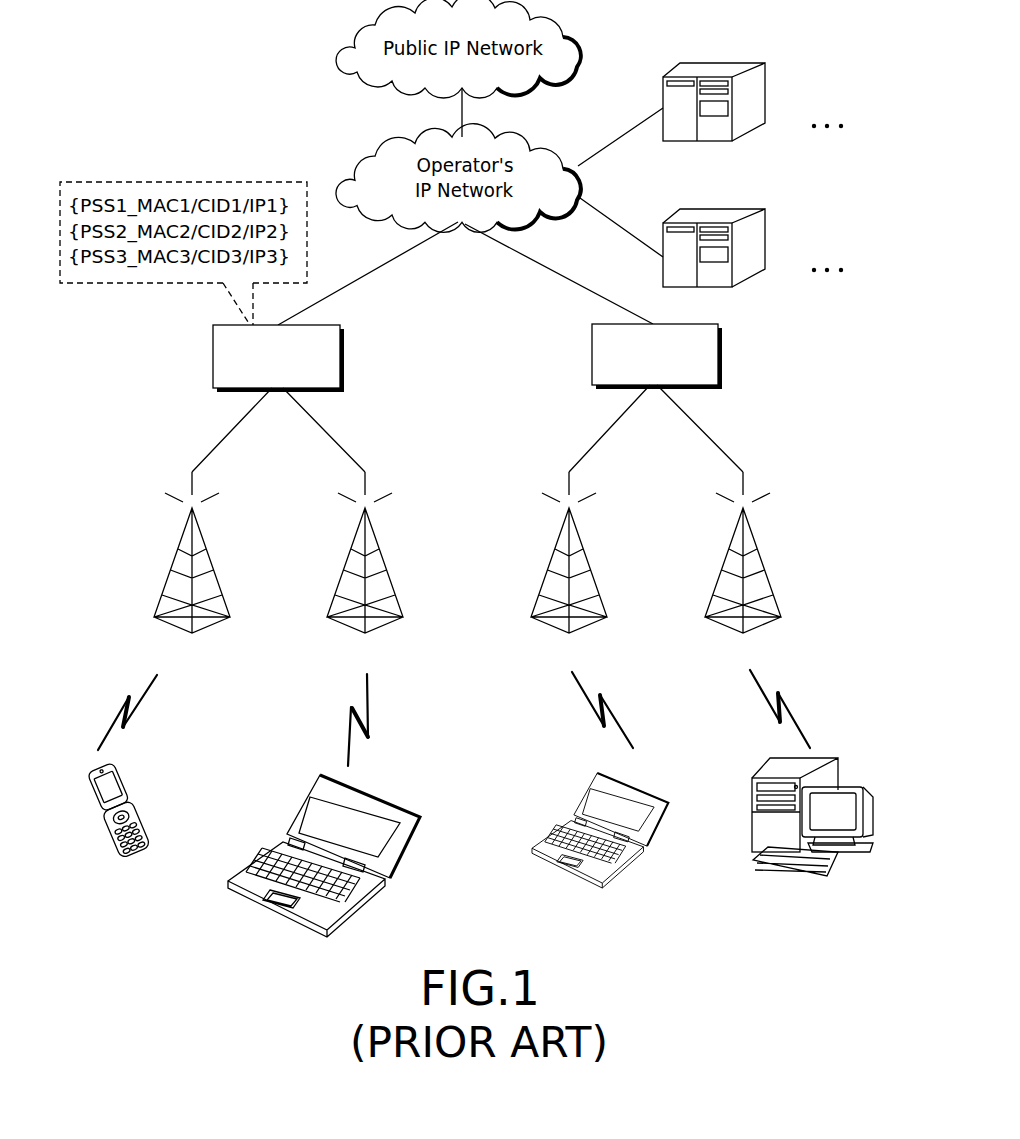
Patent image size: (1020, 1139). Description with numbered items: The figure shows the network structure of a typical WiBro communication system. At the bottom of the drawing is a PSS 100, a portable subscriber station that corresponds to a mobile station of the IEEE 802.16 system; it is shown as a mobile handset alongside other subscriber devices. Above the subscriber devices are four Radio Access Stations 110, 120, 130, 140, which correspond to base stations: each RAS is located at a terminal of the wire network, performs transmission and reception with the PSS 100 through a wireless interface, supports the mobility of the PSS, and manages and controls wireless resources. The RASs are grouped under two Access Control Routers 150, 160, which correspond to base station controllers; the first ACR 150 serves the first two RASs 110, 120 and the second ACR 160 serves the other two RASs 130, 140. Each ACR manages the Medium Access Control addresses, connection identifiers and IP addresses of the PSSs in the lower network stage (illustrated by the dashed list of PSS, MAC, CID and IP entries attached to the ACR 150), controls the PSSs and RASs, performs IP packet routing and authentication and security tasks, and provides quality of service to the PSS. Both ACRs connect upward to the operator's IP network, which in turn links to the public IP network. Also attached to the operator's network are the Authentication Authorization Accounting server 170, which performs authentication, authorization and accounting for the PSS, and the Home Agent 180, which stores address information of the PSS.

The PSS 100 is at (124, 786).
The Radio Access Station 110 is at (212, 562).
The Radio Access Station 120 is at (385, 562).
The Radio Access Station 130 is at (590, 562).
The Radio Access Station 140 is at (766, 562).
The Access Control Router 150 is at (343, 359).
The Access Control Router 160 is at (722, 359).
The Authentication Authorization Accounting server 170 is at (768, 241).
The Home Agent 180 is at (768, 96).